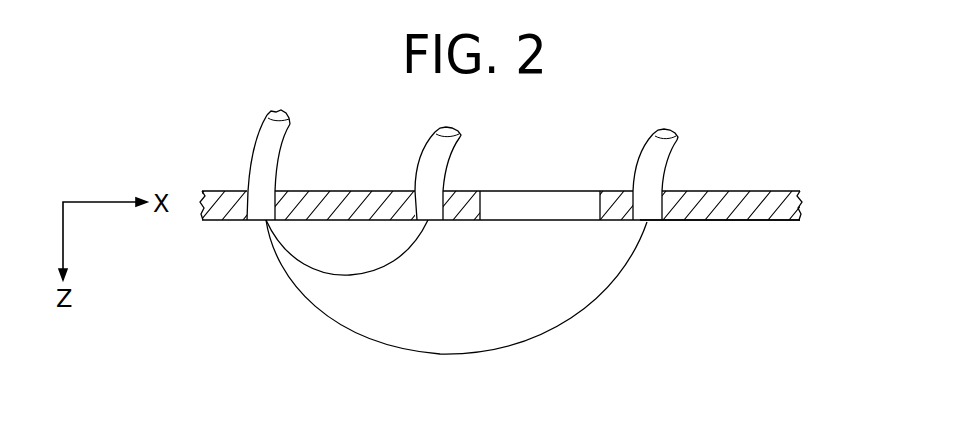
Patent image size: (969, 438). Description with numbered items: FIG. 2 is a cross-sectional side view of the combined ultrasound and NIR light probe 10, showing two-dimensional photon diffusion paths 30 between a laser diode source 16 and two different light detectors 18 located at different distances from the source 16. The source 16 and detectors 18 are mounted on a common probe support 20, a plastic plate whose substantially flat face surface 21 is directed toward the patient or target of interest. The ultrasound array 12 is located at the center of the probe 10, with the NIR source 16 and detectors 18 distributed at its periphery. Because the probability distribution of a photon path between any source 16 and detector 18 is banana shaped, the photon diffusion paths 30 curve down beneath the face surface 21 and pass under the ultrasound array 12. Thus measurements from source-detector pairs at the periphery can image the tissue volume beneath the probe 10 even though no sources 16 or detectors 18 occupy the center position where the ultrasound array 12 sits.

The combined probe 10 is at (715, 357).
The ultrasound array 12 is at (534, 197).
The laser diode source 16 is at (263, 168).
The light detector 18 is at (440, 172).
The probe support 20 is at (767, 192).
The face surface 21 is at (708, 221).
The photon diffusion paths 30 is at (383, 268).